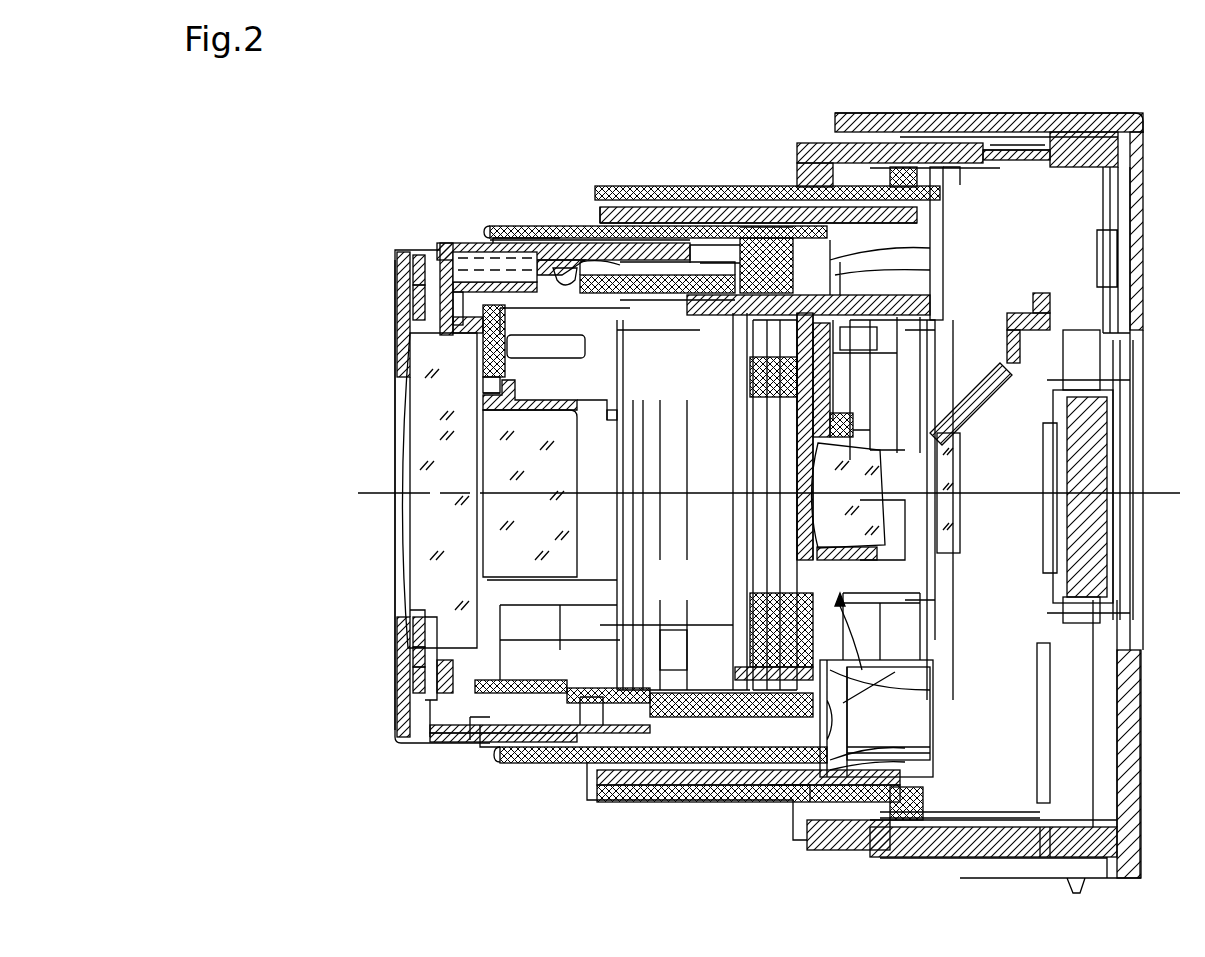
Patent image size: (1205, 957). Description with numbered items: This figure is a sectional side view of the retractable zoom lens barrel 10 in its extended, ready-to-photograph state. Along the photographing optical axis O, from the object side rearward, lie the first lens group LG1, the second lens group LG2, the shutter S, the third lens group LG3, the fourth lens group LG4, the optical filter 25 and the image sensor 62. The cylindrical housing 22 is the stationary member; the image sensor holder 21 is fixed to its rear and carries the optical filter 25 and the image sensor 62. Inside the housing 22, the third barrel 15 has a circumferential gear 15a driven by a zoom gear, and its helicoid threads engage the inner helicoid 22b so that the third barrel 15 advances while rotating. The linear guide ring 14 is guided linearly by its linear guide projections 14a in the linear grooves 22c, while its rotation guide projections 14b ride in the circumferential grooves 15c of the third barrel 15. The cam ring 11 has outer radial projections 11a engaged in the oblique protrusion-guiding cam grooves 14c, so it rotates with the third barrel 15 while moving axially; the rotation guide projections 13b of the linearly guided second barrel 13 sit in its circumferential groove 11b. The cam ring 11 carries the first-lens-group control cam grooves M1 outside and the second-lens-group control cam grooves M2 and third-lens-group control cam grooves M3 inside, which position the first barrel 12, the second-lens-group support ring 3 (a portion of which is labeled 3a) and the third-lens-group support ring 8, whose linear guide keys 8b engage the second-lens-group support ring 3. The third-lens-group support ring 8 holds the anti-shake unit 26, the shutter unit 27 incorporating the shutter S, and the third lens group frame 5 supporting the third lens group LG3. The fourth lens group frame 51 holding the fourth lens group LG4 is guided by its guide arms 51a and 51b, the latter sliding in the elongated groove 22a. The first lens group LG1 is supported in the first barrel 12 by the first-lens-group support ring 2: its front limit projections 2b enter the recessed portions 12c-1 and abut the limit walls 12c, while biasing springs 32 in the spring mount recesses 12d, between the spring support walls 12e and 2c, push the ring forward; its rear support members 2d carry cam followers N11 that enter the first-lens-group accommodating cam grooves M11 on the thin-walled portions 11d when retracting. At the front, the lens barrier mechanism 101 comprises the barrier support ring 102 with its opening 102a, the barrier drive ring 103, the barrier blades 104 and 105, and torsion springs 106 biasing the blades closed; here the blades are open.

The zoom lens barrel 10 is at (343, 163).
The torsion springs 106 is at (405, 248).
The lens barrier mechanism 101 is at (380, 357).
The barrier support ring 102 is at (410, 637).
The opening 102a is at (410, 610).
The barrier drive ring 103 is at (430, 690).
The barrier blades 104 is at (412, 660).
The barrier blades 105 is at (412, 678).
The first-lens-group support ring 2 is at (440, 320).
The front limit projections 2b is at (435, 260).
The spring support walls 2c is at (450, 262).
The support members 2d is at (568, 268).
The biasing springs 32 is at (475, 262).
The first barrel 12 is at (574, 243).
The limit walls 12c is at (410, 250).
The recessed portions 12c-1 is at (470, 255).
The spring mount recesses 12d is at (514, 260).
The spring support walls 12e is at (540, 250).
The second barrel 13 is at (552, 243).
The rotation guide projections 13b is at (766, 265).
The cam ring 11 is at (672, 226).
The outer radial projections 11a is at (905, 752).
The circumferential groove 11b is at (768, 227).
The thin-walled portions 11d is at (605, 275).
The third barrel 15 is at (704, 207).
The circumferential gear 15a is at (906, 830).
The circumferential grooves 15c is at (870, 186).
The linear guide ring 14 is at (750, 215).
The linear guide projections 14a is at (920, 820).
The rotation guide projections 14b is at (738, 806).
The protrusion-guiding cam grooves 14c is at (778, 802).
The first-lens-group control cam grooves M1 is at (726, 235).
The first-lens-group accommodating cam grooves M11 is at (600, 275).
The second-lens-group control cam grooves M2 is at (700, 300).
The third-lens-group control cam grooves M3 is at (740, 315).
The cam followers N11 is at (562, 292).
The second-lens-group support ring 3 is at (523, 690).
The second lens group frame arm 3a is at (598, 330).
The third-lens-group support ring 8 is at (895, 310).
The linear guide keys 8b is at (720, 340).
The shutter S is at (775, 450).
The third lens group frame 5 is at (920, 437).
The fourth lens group frame 51 is at (965, 410).
The guide arm 51a is at (1012, 320).
The guide arm 51b is at (1040, 757).
The anti-shake unit 26 is at (905, 690).
The shutter unit 27 is at (745, 765).
The image sensor holder 21 is at (1130, 694).
The housing 22 is at (968, 150).
The elongated groove 22a is at (1023, 840).
The inner helicoid 22b is at (1020, 150).
The linear grooves 22c is at (975, 840).
The optical filter 25 is at (1060, 508).
The image sensor 62 is at (1093, 463).
The first lens group LG1 is at (410, 515).
The second lens group LG2 is at (500, 527).
The third lens group LG3 is at (875, 487).
The fourth lens group LG4 is at (955, 455).
The photographing optical axis O is at (362, 490).